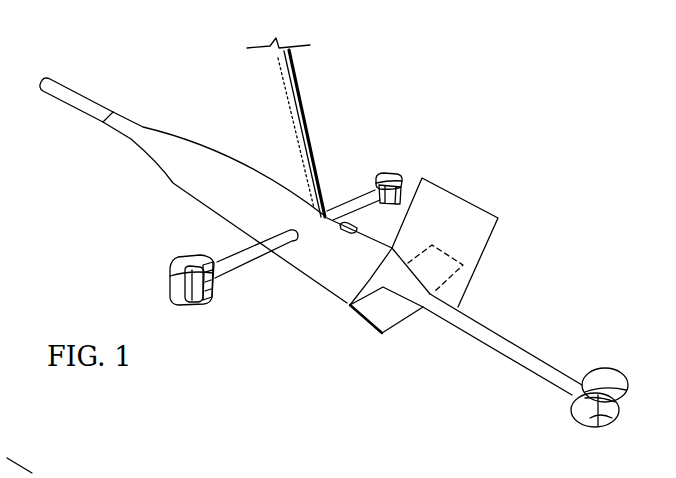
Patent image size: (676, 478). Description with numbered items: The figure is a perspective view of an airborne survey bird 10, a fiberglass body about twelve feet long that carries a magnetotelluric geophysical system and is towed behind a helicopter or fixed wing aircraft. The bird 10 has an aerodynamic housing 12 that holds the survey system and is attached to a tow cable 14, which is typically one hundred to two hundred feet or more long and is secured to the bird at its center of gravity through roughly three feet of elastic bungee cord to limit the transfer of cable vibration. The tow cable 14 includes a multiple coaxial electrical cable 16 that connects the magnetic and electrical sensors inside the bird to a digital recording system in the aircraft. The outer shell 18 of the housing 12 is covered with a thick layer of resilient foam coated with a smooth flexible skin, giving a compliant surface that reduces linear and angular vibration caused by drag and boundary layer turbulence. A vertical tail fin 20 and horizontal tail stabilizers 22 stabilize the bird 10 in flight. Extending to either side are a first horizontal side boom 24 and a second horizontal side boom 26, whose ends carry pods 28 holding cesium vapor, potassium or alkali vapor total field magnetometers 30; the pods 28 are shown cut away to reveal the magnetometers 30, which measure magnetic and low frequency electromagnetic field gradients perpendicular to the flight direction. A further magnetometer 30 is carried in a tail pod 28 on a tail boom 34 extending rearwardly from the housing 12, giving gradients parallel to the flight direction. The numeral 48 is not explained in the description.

The airborne survey bird 10 is at (452, 127).
The aerodynamic housing 12 is at (323, 280).
The tow cable 14 is at (310, 130).
The multiple coaxial electrical cable 16 is at (293, 102).
The outer shell 18 is at (220, 208).
The vertical tail fin 20 is at (465, 225).
The horizontal tail stabilizers 22 is at (455, 273).
The first horizontal side boom 24 is at (238, 258).
The second horizontal side boom 26 is at (348, 203).
The pods 28 is at (172, 287).
The total field magnetometers 30 is at (192, 303).
The tail boom 34 is at (522, 358).
The handle grip 48 is at (83, 110).